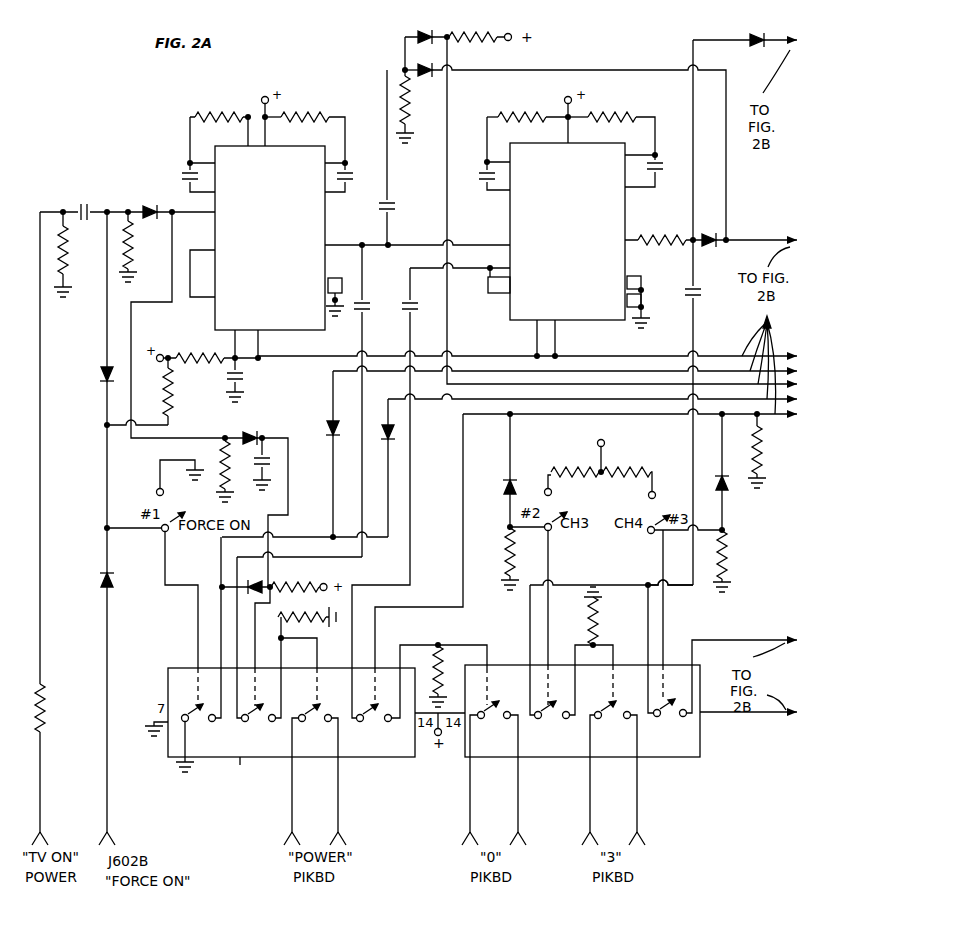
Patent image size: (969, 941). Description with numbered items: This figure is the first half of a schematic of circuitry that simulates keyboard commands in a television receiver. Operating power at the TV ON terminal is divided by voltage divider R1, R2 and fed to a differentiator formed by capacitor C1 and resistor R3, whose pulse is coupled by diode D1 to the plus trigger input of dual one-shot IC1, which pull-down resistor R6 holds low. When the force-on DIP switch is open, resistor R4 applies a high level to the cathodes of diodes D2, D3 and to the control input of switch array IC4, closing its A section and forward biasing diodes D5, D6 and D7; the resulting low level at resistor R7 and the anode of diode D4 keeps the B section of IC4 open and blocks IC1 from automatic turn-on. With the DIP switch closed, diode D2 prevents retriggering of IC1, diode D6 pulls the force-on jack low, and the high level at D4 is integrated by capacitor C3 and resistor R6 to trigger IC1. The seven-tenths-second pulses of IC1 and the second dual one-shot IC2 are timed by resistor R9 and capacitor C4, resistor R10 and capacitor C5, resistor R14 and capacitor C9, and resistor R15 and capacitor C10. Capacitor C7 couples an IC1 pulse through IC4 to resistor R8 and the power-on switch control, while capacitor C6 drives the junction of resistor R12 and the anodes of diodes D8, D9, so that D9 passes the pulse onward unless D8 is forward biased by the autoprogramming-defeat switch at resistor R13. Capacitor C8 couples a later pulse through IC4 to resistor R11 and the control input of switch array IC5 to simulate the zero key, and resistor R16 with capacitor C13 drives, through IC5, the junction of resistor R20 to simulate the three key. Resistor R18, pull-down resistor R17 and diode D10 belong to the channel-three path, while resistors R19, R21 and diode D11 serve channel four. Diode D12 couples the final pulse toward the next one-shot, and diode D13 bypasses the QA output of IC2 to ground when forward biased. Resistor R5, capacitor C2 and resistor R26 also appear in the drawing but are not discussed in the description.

The voltage divider resistor R1 is at (55, 708).
The voltage divider resistor R2 is at (78, 254).
The differentiator resistor R3 is at (143, 247).
The pull-up resistor R4 is at (186, 392).
The resistor R5 150K R5 is at (200, 340).
The pull-down resistor R6 is at (230, 472).
The resistor R7 is at (301, 577).
The resistor R8 is at (306, 610).
The timing resistor R9 is at (219, 101).
The timing resistor R10 is at (297, 101).
The resistor R11 is at (424, 663).
The resistor R12 is at (420, 106).
The resistor R13 is at (479, 22).
The timing resistor R14 is at (516, 99).
The timing resistor R15 is at (602, 99).
The coupling resistor R16 is at (662, 225).
The pull-down resistor R17 is at (494, 559).
The resistor R18 is at (573, 454).
The resistor R19 is at (627, 454).
The resistor R20 is at (606, 617).
The resistor R21 is at (739, 561).
The resistor R26 100K R26 is at (773, 457).
The differentiator capacitor C1 is at (87, 196).
The capacitor C2 .10 C2 is at (254, 379).
The capacitor C3 is at (283, 446).
The timing capacitor C4 is at (174, 156).
The timing capacitor C5 is at (357, 164).
The coupling capacitor C6 is at (396, 200).
The coupling capacitor C7 is at (371, 301).
The coupling capacitor C8 is at (420, 301).
The timing capacitor C9 is at (475, 180).
The timing capacitor C10 is at (667, 157).
The coupling capacitor C13 is at (696, 293).
The diode D1 is at (145, 203).
The diode D2 is at (93, 372).
The diode D3 is at (96, 582).
The diode D4 is at (248, 428).
The diode D5 is at (251, 578).
The diode D6 is at (321, 425).
The diode D7 is at (398, 433).
The diode D8 is at (426, 28).
The diode D9 is at (420, 64).
The diode D10 is at (496, 488).
The diode D11 is at (712, 484).
The diode D12 is at (712, 230).
The diode D13 is at (752, 27).
The dual one-shot IC1 is at (271, 238).
The dual one-shot IC2 is at (569, 239).
The electronic switch array IC4 is at (291, 716).
The electronic switch array IC5 is at (582, 711).